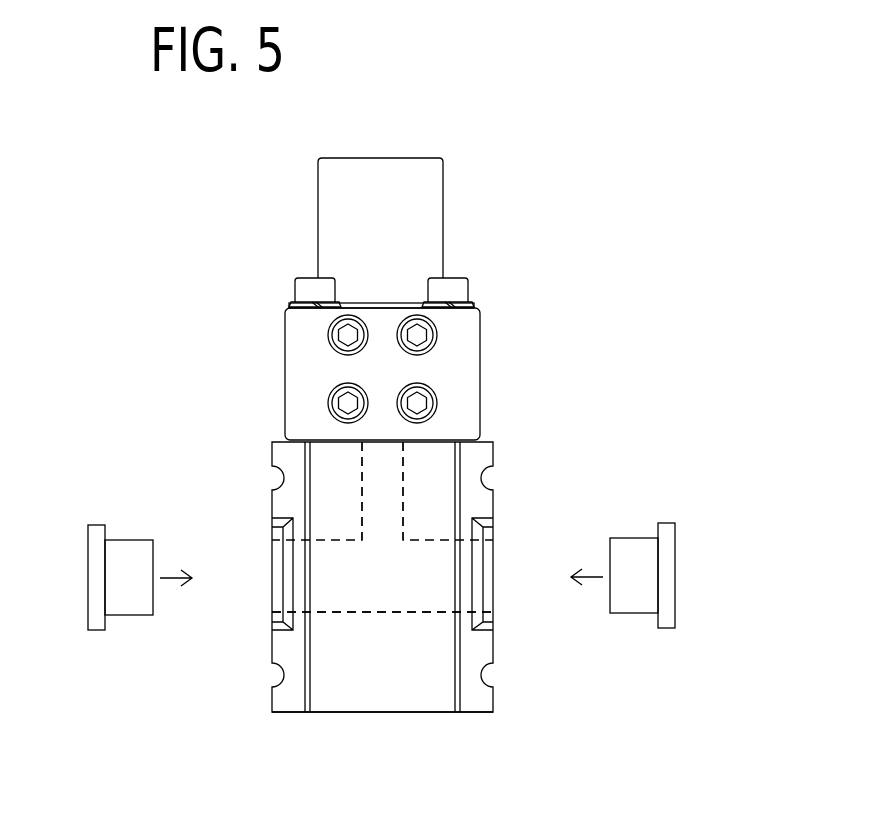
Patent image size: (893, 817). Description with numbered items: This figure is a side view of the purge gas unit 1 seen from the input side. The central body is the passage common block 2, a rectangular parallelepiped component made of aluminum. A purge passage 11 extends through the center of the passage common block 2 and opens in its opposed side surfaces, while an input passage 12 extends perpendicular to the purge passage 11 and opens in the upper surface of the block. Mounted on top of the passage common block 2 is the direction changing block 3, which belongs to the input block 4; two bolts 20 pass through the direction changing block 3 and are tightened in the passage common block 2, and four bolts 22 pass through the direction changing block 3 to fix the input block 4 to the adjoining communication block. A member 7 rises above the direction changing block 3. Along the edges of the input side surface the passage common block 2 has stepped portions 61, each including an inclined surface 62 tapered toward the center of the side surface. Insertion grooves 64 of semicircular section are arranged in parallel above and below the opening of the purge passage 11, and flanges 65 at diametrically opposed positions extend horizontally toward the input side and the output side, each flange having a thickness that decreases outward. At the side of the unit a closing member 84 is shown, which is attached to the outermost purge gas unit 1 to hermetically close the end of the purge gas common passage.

The purge gas unit 1 is at (516, 117).
The passage common block 2 is at (483, 451).
The direction changing block 3 is at (463, 385).
The input block 4 is at (548, 341).
The cylinder tube 7 is at (437, 210).
The purge passage 11 is at (392, 606).
The input passage 12 is at (368, 487).
The bolts 20 is at (300, 291).
The bolts 22 is at (340, 398).
The stepped portions 61 is at (277, 700).
The inclined surface 62 is at (305, 698).
The insertion grooves 64 is at (272, 478).
The flanges 65 is at (276, 617).
The closing member 84 is at (96, 576).